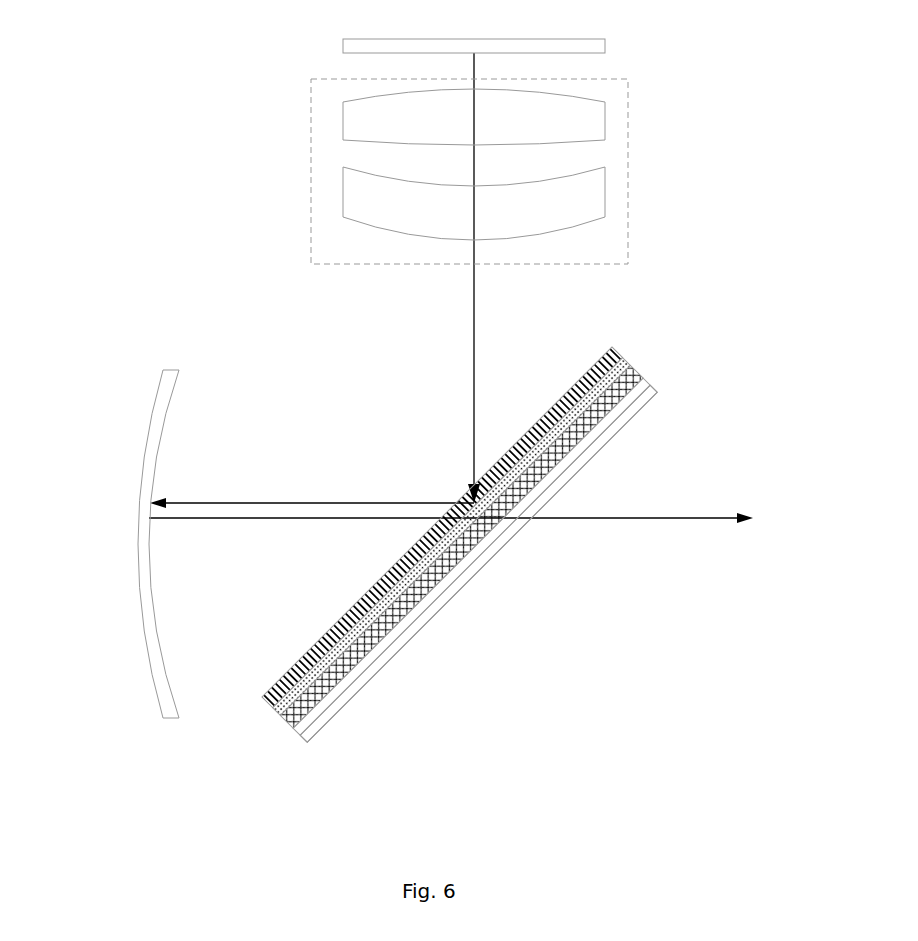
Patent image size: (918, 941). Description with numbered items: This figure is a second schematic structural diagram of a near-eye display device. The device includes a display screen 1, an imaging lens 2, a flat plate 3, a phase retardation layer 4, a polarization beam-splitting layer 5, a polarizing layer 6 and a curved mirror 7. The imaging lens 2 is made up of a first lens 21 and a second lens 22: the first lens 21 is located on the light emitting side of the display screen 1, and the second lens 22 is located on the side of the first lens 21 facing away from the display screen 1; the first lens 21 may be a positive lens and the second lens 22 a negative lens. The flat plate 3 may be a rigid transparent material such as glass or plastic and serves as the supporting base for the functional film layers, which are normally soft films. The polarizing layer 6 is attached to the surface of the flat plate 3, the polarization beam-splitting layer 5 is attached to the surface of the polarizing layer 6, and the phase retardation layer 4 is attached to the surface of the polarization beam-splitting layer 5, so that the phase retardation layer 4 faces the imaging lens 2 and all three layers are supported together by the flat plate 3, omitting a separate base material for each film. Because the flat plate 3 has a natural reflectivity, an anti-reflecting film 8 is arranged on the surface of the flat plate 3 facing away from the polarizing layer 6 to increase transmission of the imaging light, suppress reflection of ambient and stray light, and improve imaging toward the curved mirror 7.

The display screen 1 is at (343, 42).
The imaging lens 2 is at (475, 171).
The first lens 21 is at (343, 120).
The second lens 22 is at (343, 192).
The flat plate 3 is at (598, 427).
The phase retardation layer 4 is at (617, 350).
The polarization beam-splitting layer 5 is at (627, 360).
The polarizing layer 6 is at (637, 374).
The curved mirror 7 is at (155, 410).
The anti-reflecting film 8 is at (362, 688).